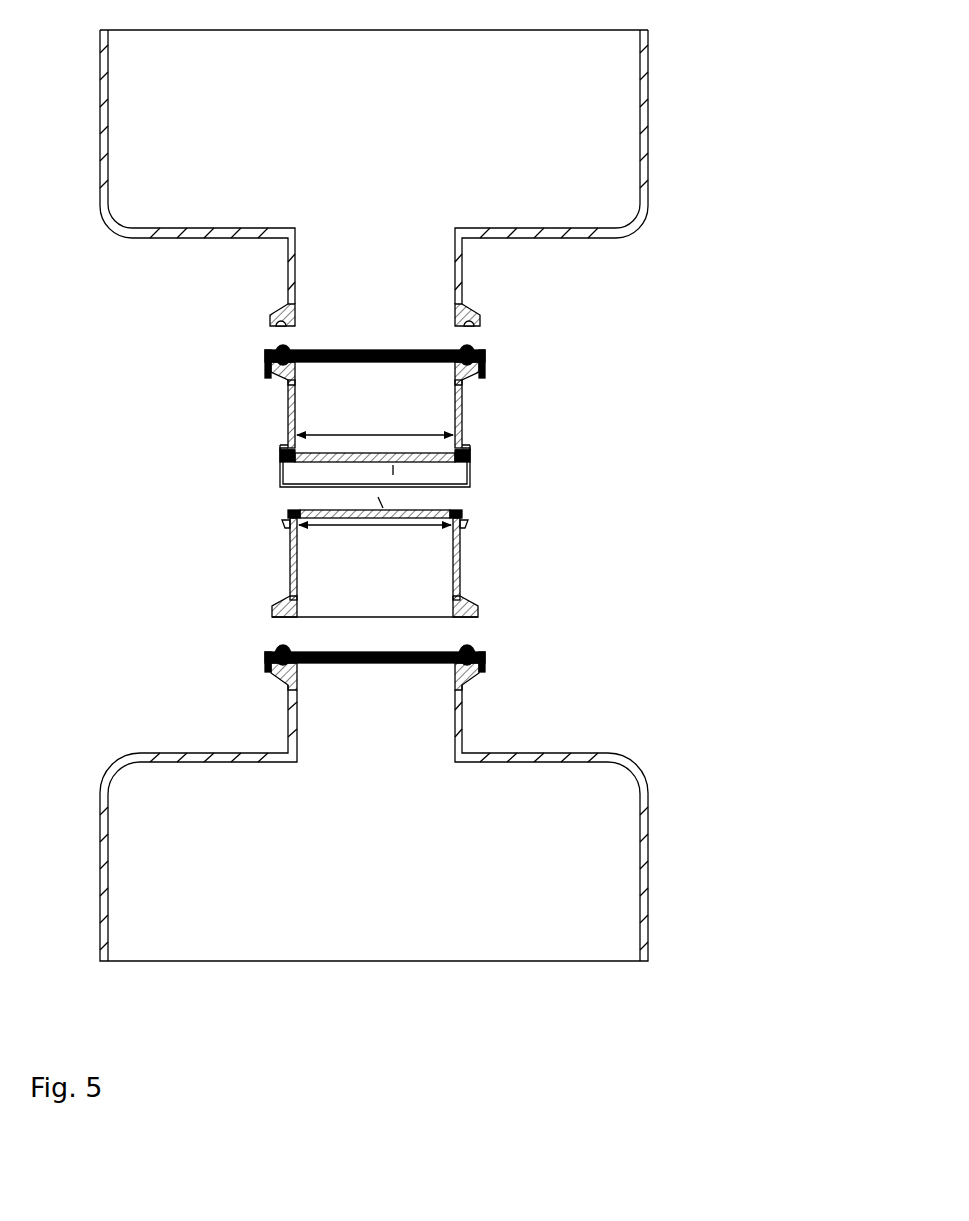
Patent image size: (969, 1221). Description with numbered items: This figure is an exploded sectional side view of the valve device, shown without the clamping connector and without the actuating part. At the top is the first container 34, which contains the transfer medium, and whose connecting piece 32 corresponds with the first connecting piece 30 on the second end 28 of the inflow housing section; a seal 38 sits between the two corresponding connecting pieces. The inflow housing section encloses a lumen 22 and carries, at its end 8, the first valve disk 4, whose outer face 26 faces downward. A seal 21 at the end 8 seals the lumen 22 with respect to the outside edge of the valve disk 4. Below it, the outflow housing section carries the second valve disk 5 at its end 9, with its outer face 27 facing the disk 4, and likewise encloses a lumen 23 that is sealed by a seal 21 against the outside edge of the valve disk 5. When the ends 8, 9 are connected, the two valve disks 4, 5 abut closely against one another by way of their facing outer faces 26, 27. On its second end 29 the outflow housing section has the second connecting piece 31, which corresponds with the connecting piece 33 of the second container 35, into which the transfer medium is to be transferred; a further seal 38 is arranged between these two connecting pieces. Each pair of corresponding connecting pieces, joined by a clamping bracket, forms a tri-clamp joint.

The first container 34 is at (570, 145).
The connecting piece 32 is at (476, 311).
The seal 38 is at (268, 352).
The first connecting piece 30 is at (470, 373).
The second end 28 is at (463, 378).
The lumen 22 is at (381, 434).
The seal 21 is at (280, 455).
The first valve disk 4 is at (337, 460).
The end 8 is at (470, 452).
The outer face 26 is at (393, 460).
The outer face 27 is at (387, 508).
The second valve disk 5 is at (460, 510).
The end 9 is at (467, 523).
The lumen 23 is at (381, 527).
The second end 29 is at (470, 598).
The second connecting piece 31 is at (480, 605).
The connecting piece 33 is at (477, 673).
The second container 35 is at (562, 829).